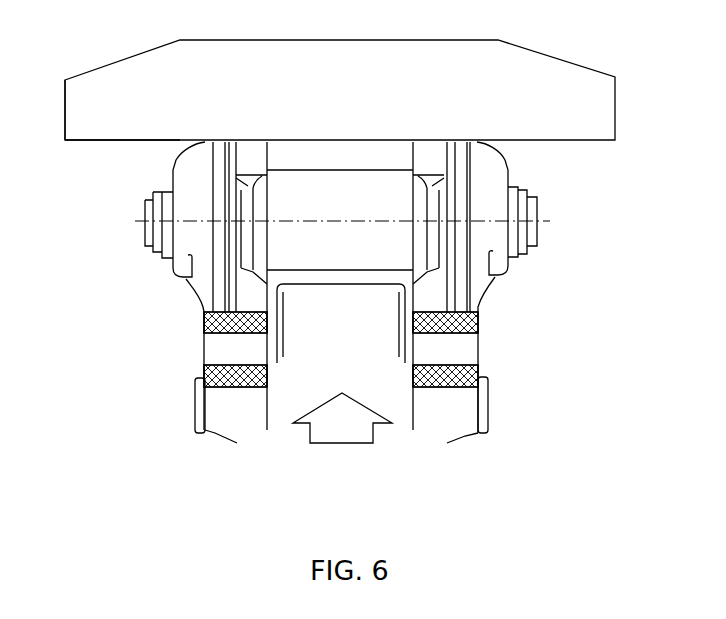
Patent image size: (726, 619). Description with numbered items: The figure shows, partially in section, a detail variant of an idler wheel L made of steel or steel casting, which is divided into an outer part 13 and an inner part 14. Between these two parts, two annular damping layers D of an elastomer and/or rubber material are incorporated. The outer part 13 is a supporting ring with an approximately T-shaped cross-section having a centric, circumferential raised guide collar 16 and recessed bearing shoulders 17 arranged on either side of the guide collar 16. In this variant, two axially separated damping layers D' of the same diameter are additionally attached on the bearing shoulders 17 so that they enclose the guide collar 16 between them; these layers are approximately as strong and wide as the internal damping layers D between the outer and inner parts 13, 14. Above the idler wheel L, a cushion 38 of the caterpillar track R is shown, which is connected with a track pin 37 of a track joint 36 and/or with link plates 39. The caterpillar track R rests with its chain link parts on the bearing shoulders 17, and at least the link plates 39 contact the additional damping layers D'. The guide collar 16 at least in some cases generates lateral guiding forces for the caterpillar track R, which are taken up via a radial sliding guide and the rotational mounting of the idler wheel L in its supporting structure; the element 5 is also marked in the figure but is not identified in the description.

The cushion 38 is at (545, 70).
The caterpillar track R is at (58, 126).
The fastening assembly 5 is at (100, 150).
The link plates 39 is at (183, 180).
The track joint 36 is at (534, 190).
The track pin 37 is at (349, 190).
The guide collar 16 is at (320, 280).
The outer part 13 is at (370, 284).
The bearing shoulders 17 is at (208, 337).
The damping layers D' is at (347, 305).
The damping layers D is at (341, 427).
The idler wheel L is at (185, 402).
The inner part 14 is at (491, 407).